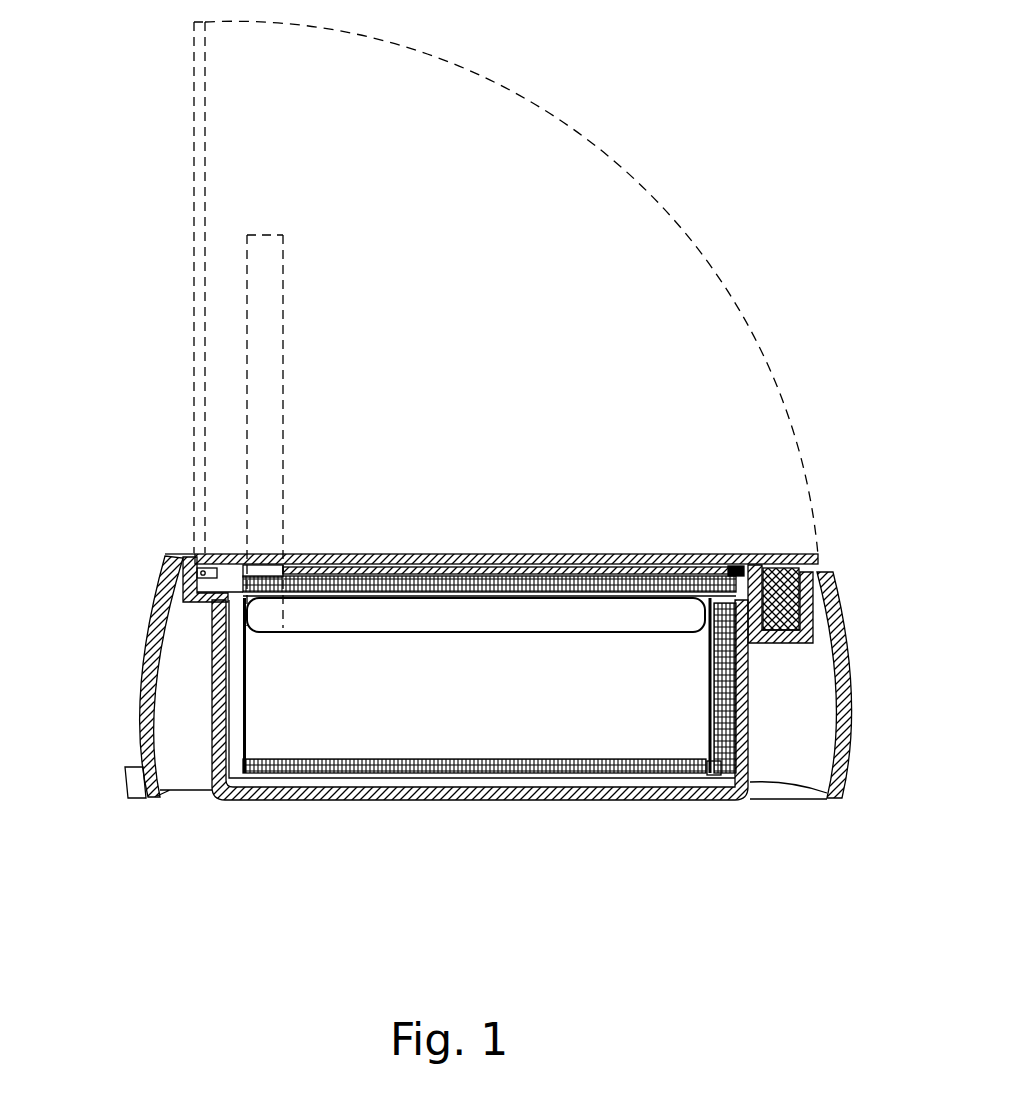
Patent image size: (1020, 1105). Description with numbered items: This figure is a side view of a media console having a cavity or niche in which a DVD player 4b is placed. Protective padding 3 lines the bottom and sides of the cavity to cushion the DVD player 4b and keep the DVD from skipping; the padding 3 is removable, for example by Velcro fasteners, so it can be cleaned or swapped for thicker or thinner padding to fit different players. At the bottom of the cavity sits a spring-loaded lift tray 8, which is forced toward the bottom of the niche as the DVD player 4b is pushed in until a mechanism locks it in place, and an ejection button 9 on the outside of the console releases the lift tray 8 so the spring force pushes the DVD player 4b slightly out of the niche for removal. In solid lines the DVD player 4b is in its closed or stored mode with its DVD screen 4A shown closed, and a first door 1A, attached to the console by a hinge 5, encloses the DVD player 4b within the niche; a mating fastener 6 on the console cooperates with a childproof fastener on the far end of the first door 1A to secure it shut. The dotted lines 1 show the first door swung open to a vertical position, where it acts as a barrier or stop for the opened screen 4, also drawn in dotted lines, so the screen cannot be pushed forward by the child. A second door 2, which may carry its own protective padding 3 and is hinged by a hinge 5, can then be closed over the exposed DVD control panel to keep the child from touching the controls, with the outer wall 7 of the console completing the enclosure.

The opened first door 1 is at (606, 167).
The first door 1A is at (405, 553).
The second door 2 is at (482, 567).
The protective padding 3 is at (600, 578).
The opened screen 4 is at (290, 342).
The DVD screen 4A is at (550, 612).
The DVD player 4b is at (582, 690).
The hinge 5 is at (198, 572).
The mating fastener 6 is at (812, 592).
The outer wall 7 is at (135, 690).
The lift tray 8 is at (267, 800).
The ejection button 9 is at (126, 780).